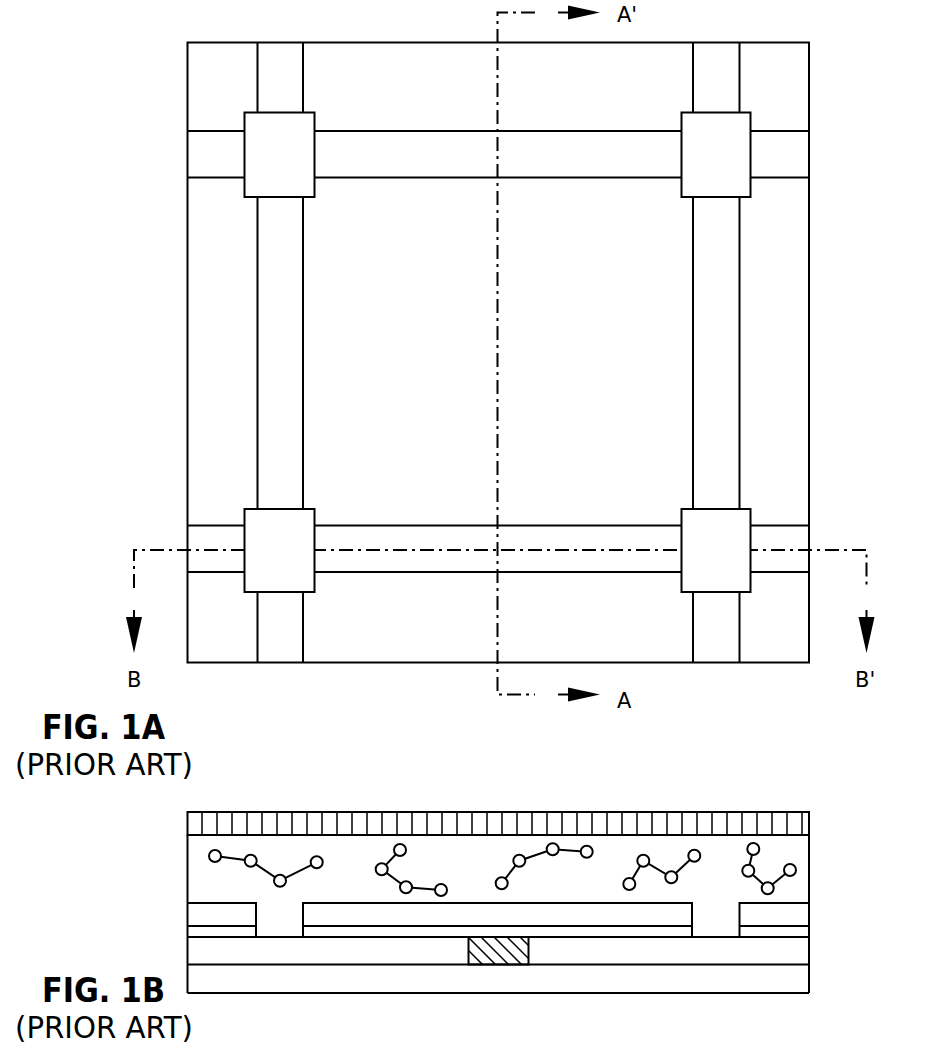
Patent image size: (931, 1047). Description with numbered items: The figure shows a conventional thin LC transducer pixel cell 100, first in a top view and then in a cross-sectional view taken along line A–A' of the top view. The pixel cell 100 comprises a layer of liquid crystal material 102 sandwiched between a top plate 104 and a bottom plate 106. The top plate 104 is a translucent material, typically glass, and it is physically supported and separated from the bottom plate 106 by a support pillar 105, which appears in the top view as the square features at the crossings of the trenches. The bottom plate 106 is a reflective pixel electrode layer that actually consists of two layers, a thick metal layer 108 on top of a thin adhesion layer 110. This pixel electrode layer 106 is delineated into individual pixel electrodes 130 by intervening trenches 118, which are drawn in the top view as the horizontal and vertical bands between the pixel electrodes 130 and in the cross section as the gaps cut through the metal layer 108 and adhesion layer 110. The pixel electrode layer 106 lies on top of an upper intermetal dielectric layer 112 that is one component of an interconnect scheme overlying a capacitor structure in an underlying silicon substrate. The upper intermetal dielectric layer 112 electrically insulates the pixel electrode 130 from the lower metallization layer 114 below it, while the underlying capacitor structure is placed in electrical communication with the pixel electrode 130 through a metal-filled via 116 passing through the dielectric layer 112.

In FIG. 1A, the thin LC transducer pixel cell 100 is at (120, 301).
In FIG. 1B, the thin LC transducer pixel cell 100 is at (93, 893).
In FIG. 1B, the liquid crystal material layer 102 is at (760, 850).
In FIG. 1A, the top plate 104 is at (678, 213).
In FIG. 1B, the top plate 104 is at (803, 825).
In FIG. 1A, the support pillar 105 is at (740, 186).
In FIG. 1B, the bottom plate 106 is at (178, 903).
In FIG. 1B, the thick metal layer 108 is at (802, 908).
In FIG. 1B, the thin adhesion layer 110 is at (802, 933).
In FIG. 1B, the upper intermetal dielectric layer 112 is at (800, 956).
In FIG. 1B, the lower metallization layer 114 is at (805, 983).
In FIG. 1B, the metal-filled via 116 is at (480, 938).
In FIG. 1A, the intervening trenches 118 is at (790, 159).
In FIG. 1B, the intervening trenches 118 is at (722, 918).
In FIG. 1A, the pixel electrode 130 is at (602, 292).
In FIG. 1B, the pixel electrode 130 is at (484, 884).